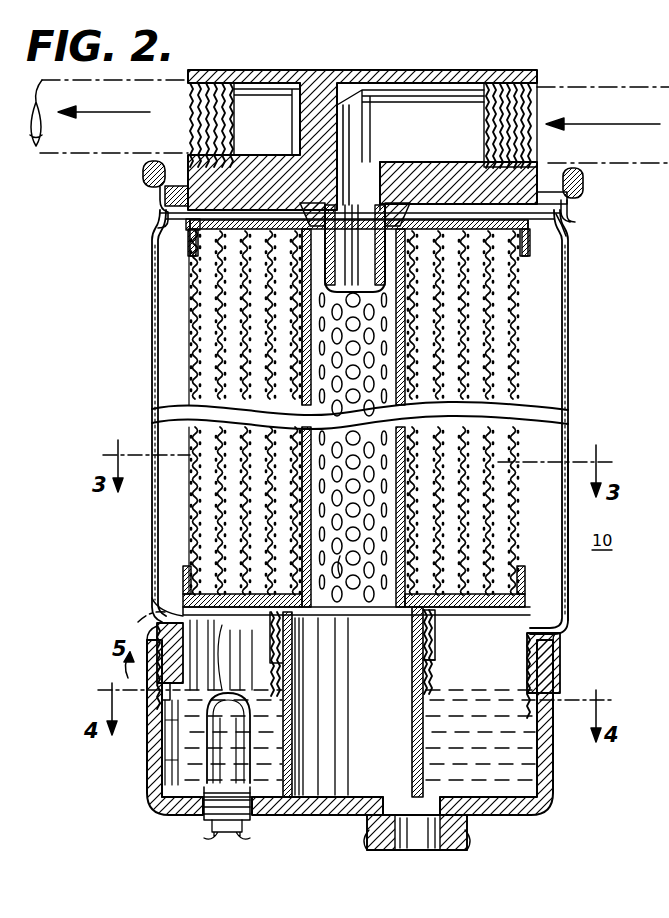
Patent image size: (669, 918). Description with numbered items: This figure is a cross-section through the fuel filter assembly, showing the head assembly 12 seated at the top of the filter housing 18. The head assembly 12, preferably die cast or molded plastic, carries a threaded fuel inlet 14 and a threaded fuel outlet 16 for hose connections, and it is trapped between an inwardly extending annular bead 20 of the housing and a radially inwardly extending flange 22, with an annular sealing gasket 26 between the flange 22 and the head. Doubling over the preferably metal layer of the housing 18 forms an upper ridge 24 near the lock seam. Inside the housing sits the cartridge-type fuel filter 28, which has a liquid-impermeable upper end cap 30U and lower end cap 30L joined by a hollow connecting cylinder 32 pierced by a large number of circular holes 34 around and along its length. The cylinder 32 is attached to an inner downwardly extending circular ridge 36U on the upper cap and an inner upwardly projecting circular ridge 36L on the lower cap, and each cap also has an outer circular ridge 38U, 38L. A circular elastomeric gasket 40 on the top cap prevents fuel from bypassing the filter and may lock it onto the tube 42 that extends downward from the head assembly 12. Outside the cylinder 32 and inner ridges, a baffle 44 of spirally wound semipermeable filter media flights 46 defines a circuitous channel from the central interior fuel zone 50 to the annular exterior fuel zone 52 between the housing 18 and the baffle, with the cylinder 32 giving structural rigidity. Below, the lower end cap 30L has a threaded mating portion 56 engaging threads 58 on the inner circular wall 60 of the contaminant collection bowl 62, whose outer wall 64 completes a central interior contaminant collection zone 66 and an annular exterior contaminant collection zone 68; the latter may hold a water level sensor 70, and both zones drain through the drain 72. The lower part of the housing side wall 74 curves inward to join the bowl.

The head assembly 12 is at (277, 70).
The fuel inlet 14 is at (440, 136).
The fuel outlet 16 is at (262, 136).
The filter housing 18 is at (572, 376).
The annular bead 20 is at (560, 238).
The flange 22 is at (556, 192).
The upper ridge 24 is at (584, 190).
The annular sealing gasket 26 is at (162, 203).
The cartridge-type fuel filter 28 is at (190, 226).
The upper end cap 30U is at (530, 244).
The lower end cap 30L is at (556, 604).
The hollow connecting cylinder 32 is at (400, 452).
The circular holes 34 is at (360, 356).
The inner downwardly extending circular ridge 36U is at (305, 215).
The inner upwardly projecting circular ridge 36L is at (302, 615).
The outer circular ridge 38U is at (530, 256).
The outer circular ridge 38L is at (183, 578).
The circular gasket 40 is at (344, 205).
The tube 42 is at (335, 270).
The baffle 44 is at (195, 492).
The flights 46 is at (248, 306).
The interior fuel zone 50 is at (382, 545).
The exterior fuel zone 52 is at (540, 570).
The mating portion 56 is at (438, 646).
The threads 58 is at (432, 662).
The inner circular wall 60 is at (350, 718).
The contaminant collection bowl 62 is at (555, 745).
The outer wall 64 is at (150, 758).
The central interior contaminant collection zone 66 is at (345, 802).
The annular exterior contaminant collection zone 68 is at (537, 778).
The water level sensor 70 is at (203, 798).
The drain 72 is at (470, 832).
The side wall 74 is at (148, 590).